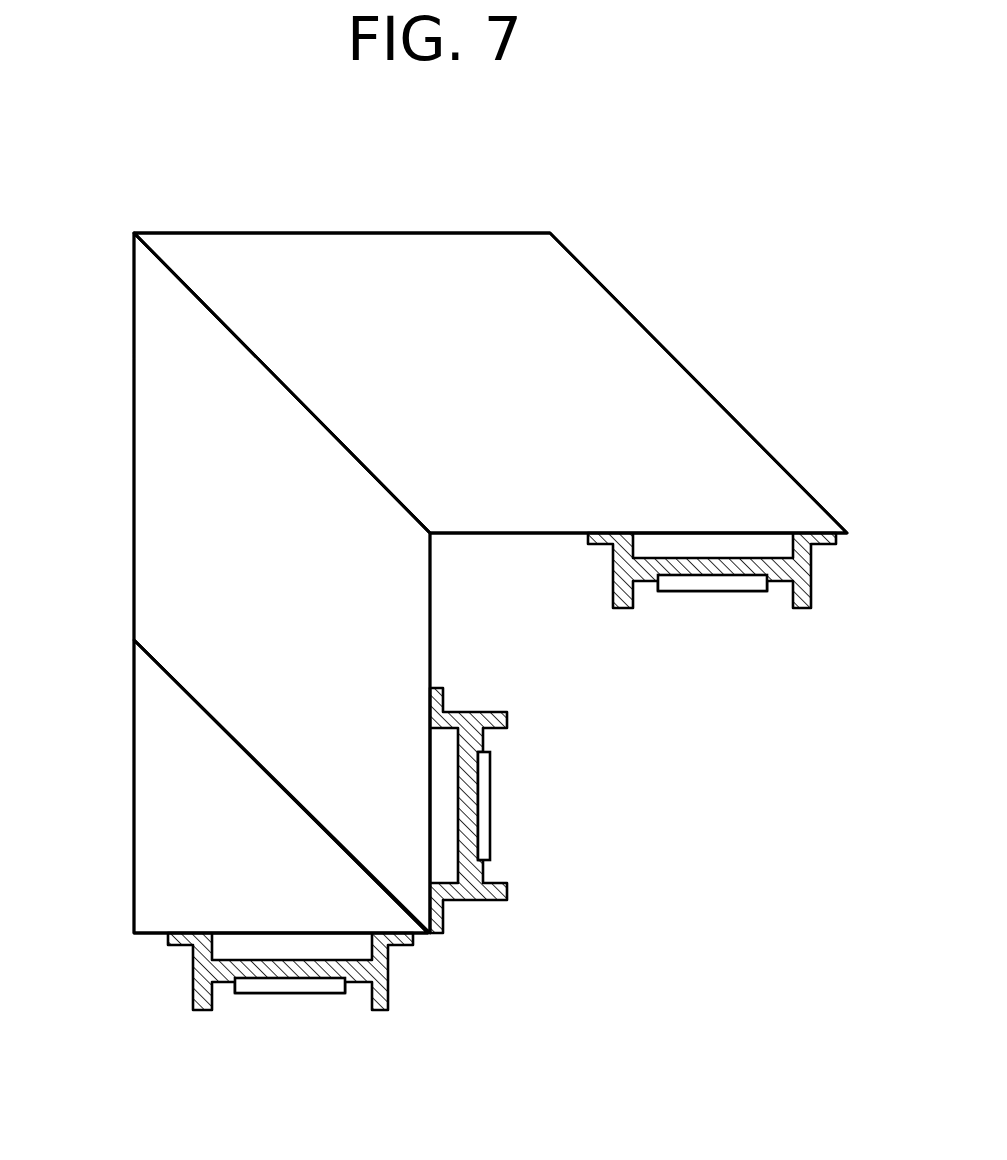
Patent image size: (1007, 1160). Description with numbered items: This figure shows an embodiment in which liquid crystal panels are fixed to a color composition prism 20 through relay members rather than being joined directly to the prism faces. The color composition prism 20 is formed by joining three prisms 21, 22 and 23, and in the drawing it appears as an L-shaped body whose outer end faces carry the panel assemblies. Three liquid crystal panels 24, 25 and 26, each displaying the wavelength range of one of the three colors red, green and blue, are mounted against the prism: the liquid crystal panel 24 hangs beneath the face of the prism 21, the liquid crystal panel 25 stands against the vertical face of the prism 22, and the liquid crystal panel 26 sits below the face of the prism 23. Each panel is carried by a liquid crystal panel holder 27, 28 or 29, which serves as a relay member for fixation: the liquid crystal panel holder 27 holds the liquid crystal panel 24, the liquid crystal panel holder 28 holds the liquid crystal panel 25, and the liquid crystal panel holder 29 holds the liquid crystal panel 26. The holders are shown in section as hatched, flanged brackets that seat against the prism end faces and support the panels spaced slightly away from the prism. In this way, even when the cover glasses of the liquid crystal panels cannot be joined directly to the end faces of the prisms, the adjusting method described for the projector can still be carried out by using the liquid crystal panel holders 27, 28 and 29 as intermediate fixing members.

The color composition prism 20 is at (551, 210).
The prism 21 is at (617, 320).
The prism 22 is at (140, 483).
The prism 23 is at (148, 833).
The liquid crystal panel 24 is at (720, 591).
The liquid crystal panel 25 is at (490, 823).
The liquid crystal panel 26 is at (295, 993).
The liquid crystal panel holder 27 is at (811, 590).
The liquid crystal panel holder 28 is at (507, 716).
The liquid crystal panel holder 29 is at (388, 1000).